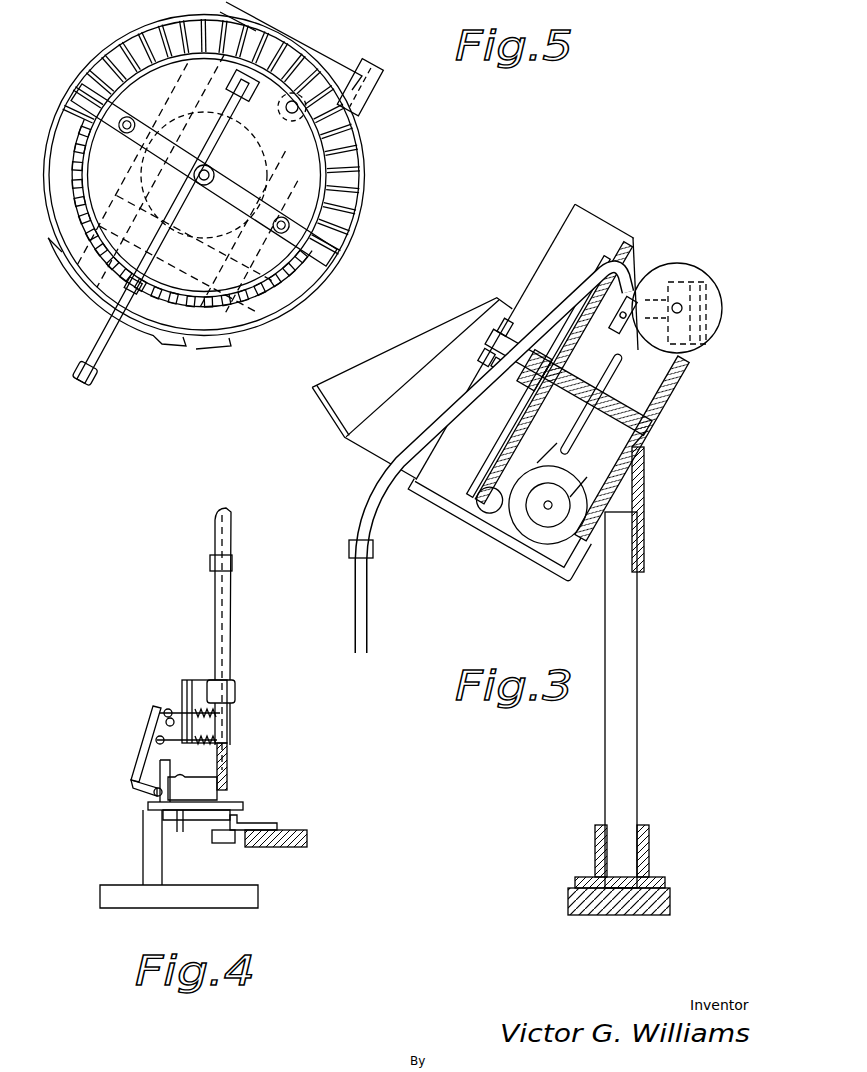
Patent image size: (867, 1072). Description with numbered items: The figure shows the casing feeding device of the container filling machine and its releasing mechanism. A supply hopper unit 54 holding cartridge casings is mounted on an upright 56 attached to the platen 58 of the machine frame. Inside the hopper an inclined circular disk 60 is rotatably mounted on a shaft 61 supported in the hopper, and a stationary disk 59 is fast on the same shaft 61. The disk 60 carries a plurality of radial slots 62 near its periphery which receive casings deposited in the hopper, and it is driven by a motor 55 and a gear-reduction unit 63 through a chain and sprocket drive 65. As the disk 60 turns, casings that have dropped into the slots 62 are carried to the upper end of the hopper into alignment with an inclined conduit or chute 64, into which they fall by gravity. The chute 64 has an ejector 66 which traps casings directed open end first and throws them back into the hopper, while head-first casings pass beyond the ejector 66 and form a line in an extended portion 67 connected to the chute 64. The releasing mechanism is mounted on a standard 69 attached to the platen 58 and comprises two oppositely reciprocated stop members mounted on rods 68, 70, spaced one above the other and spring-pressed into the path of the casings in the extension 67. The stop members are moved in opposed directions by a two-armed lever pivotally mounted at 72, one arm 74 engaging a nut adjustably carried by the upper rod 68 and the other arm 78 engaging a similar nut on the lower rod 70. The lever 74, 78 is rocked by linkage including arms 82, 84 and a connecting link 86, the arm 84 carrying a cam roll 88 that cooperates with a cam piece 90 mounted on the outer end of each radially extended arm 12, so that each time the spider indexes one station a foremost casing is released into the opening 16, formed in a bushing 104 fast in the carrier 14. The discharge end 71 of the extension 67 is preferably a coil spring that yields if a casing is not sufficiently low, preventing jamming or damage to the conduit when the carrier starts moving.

In FIG. 4, the radially extended arm 12 is at (307, 838).
In FIG. 4, the holder or carrier 14 is at (273, 823).
In FIG. 4, the opening 16 is at (236, 816).
In FIG. 3, the supply hopper unit 54 is at (495, 543).
In FIG. 5, the motor 55 is at (183, 347).
In FIG. 3, the motor 55 is at (540, 537).
In FIG. 3, the upright 56 is at (630, 674).
In FIG. 3, the platen 58 is at (670, 898).
In FIG. 4, the platen 58 is at (258, 906).
In FIG. 5, the stationary disk 59 is at (140, 87).
In FIG. 3, the stationary disk 59 is at (503, 443).
In FIG. 5, the inclined circular disk 60 is at (362, 167).
In FIG. 3, the inclined circular disk 60 is at (485, 521).
In FIG. 5, the shaft 61 is at (201, 166).
In FIG. 3, the shaft 61 is at (612, 417).
In FIG. 5, the radial slots 62 is at (360, 183).
In FIG. 3, the radial slots 62 is at (468, 492).
In FIG. 5, the gear-reduction unit 63 is at (320, 85).
In FIG. 3, the gear-reduction unit 63 is at (657, 333).
In FIG. 5, the inclined conduit or chute 64 is at (103, 347).
In FIG. 3, the inclined conduit or chute 64 is at (548, 316).
In FIG. 5, the chain and sprocket drive 65 is at (223, 102).
In FIG. 3, the chain and sprocket drive 65 is at (618, 342).
In FIG. 3, the ejector 66 is at (478, 372).
In FIG. 4, the extended portion 67 is at (356, 611).
In FIG. 4, the upper stop rod 68 is at (185, 683).
In FIG. 4, the standard 69 is at (143, 862).
In FIG. 4, the lower stop rod 70 is at (177, 742).
In FIG. 4, the discharge end 71 is at (228, 768).
In FIG. 4, the pivot 72 is at (165, 727).
In FIG. 4, the lever arm 74 is at (177, 690).
In FIG. 4, the lever arm 78 is at (160, 743).
In FIG. 4, the arm 82 is at (152, 706).
In FIG. 4, the arm 84 is at (150, 790).
In FIG. 4, the connecting link 86 is at (138, 745).
In FIG. 4, the cam roll 88 is at (168, 798).
In FIG. 4, the cam piece 90 is at (177, 823).
In FIG. 4, the bushing 104 is at (234, 843).